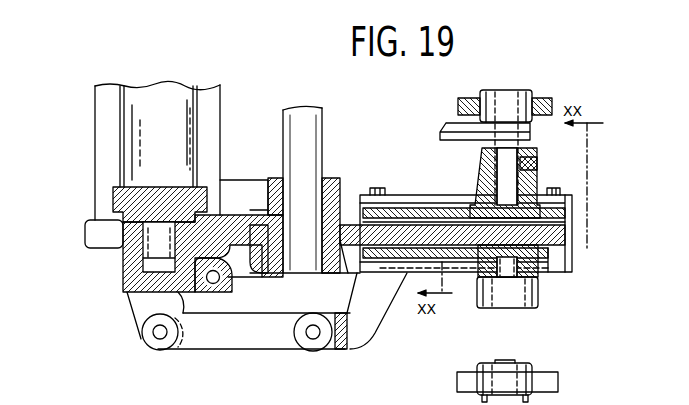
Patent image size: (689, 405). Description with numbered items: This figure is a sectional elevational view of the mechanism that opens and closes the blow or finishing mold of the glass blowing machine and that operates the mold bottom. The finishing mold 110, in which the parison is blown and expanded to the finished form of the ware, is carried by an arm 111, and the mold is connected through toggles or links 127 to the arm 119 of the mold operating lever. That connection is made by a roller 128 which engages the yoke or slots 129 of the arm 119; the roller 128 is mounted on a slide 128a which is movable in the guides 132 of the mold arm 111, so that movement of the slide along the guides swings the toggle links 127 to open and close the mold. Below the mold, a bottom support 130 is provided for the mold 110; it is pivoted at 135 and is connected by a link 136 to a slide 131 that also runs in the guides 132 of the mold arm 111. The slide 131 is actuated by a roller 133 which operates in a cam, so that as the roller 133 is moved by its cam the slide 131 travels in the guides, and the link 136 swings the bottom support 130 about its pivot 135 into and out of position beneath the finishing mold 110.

The finishing mold 110 is at (220, 95).
The arm 111 is at (558, 236).
The arm of mold operating lever 119 is at (550, 98).
The toggle link 127 is at (458, 137).
The roller 128 is at (487, 92).
The slide 128a is at (572, 212).
The yoke or slot 129 is at (523, 95).
The bottom support 130 is at (113, 194).
The slide 131 is at (372, 326).
The guides 132 is at (567, 197).
The roller 133 is at (540, 298).
The pivot 135 is at (158, 334).
The link 136 is at (238, 343).